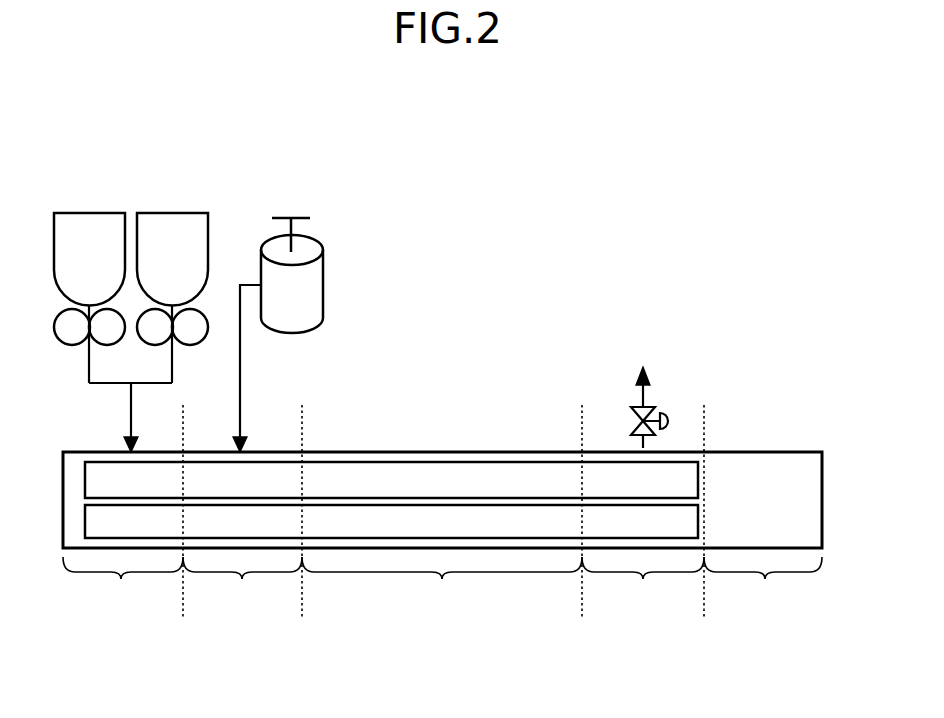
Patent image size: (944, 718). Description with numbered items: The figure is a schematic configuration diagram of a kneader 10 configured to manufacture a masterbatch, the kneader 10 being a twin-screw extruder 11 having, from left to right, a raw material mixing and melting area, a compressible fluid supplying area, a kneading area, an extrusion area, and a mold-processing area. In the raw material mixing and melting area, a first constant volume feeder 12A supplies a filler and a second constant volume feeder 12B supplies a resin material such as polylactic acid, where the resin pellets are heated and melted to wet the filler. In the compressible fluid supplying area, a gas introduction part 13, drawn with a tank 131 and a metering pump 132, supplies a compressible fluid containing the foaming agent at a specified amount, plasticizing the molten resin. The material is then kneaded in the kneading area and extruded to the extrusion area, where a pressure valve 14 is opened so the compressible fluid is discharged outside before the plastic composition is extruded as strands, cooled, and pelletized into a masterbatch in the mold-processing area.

The kneader 10 is at (776, 206).
The extruder 11 is at (392, 452).
The first constant volume feeder 12A is at (90, 224).
The second constant volume feeder 12B is at (172, 224).
The gas introduction part 13 is at (262, 152).
The liquid tank 131 is at (310, 239).
The metering pump 132 is at (283, 216).
The pressure valve 14 is at (648, 408).